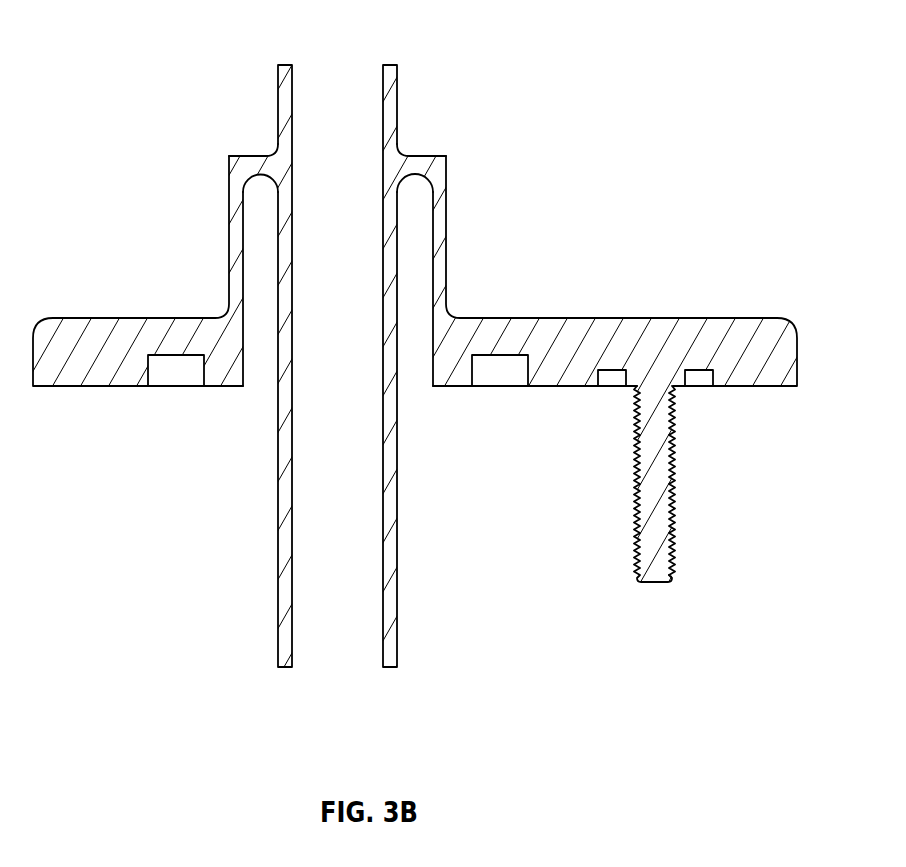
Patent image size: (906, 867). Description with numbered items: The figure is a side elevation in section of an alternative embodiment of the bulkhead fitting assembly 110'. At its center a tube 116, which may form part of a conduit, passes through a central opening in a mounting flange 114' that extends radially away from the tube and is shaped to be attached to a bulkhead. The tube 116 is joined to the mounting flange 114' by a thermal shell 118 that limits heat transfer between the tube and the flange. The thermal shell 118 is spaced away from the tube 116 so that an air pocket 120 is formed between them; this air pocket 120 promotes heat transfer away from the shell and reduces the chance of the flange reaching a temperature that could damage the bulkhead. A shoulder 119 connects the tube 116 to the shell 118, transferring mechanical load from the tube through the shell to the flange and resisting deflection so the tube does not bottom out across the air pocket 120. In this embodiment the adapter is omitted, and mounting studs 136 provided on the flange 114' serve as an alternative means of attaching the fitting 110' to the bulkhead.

The bulkhead fitting assembly 110' is at (453, 366).
The mounting flange 114' is at (415, 319).
The tube 116 is at (383, 495).
The thermal shell 118 is at (229, 268).
The shoulder 119 is at (253, 167).
The air pocket 120 is at (265, 352).
The mounting studs 136 is at (673, 430).